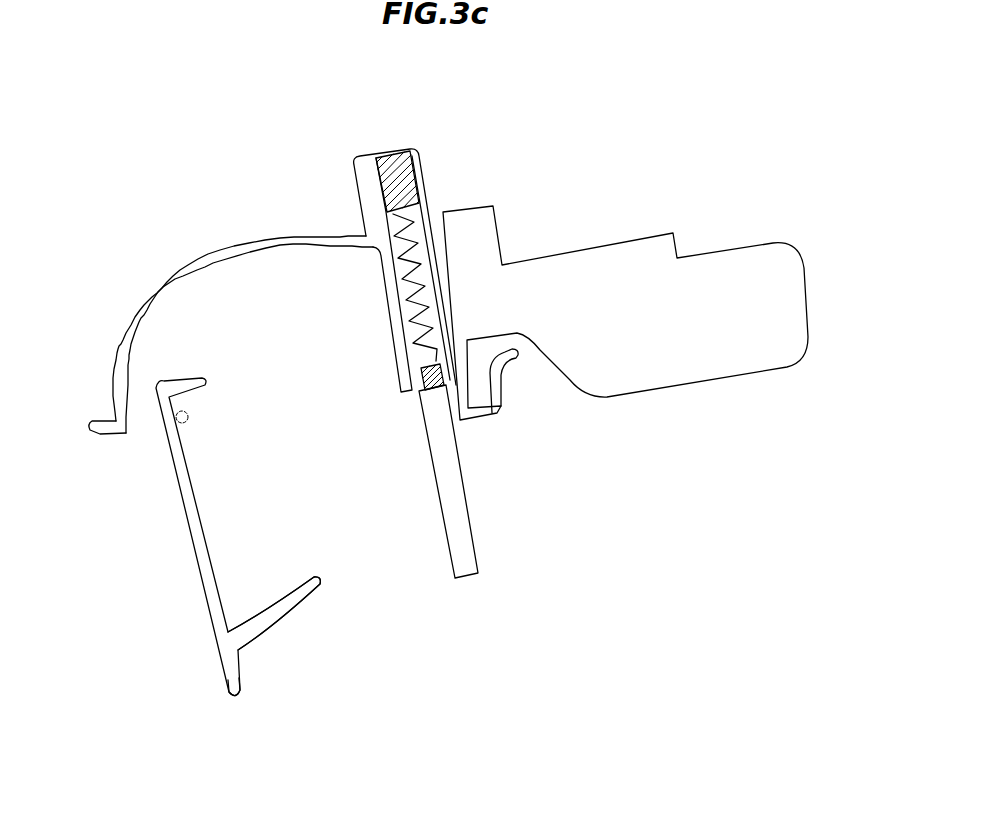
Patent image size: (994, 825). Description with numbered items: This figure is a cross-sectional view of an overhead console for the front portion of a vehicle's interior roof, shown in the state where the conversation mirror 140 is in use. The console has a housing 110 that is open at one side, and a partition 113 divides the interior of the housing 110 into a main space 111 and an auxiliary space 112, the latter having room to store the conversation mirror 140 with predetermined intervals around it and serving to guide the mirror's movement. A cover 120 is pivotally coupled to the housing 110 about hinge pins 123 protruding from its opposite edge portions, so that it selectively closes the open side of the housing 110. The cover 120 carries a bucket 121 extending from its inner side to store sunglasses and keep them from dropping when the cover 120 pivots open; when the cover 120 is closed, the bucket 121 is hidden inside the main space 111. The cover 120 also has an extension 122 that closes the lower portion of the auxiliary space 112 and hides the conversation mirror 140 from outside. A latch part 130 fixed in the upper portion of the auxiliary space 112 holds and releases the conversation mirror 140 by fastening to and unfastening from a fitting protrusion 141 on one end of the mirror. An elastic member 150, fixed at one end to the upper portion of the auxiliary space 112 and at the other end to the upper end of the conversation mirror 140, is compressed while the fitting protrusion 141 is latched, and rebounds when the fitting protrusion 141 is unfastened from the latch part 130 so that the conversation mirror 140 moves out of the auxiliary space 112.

The housing 110 is at (249, 291).
The main space 111 is at (207, 288).
The auxiliary space 112 is at (430, 207).
The partition 113 is at (380, 300).
The cover 120 is at (230, 565).
The bucket 121 is at (297, 608).
The extension 122 is at (232, 679).
The hinge pins 123 is at (178, 423).
The latch part 130 is at (382, 154).
The conversation mirror 140 is at (462, 538).
The fitting protrusion 141 is at (443, 367).
The elastic member 150 is at (383, 198).